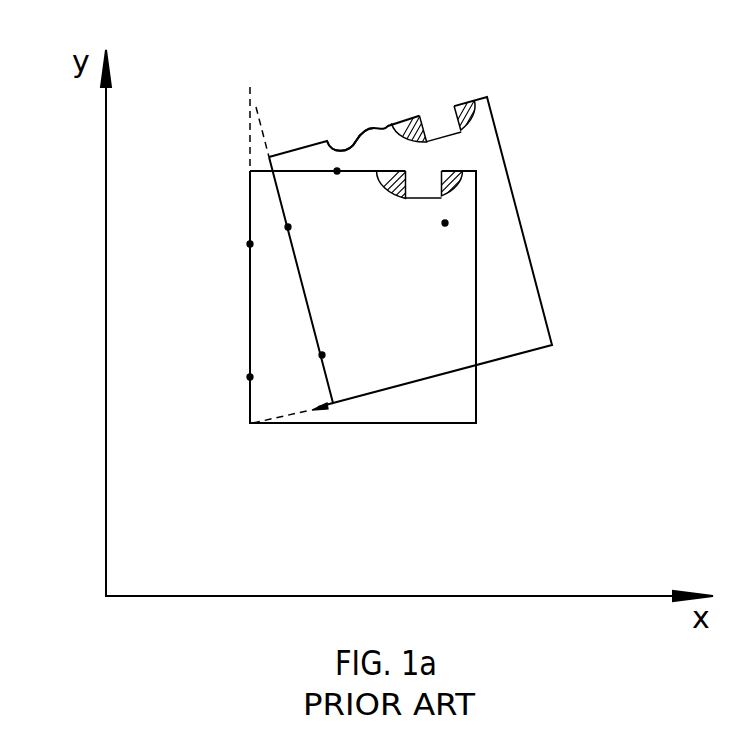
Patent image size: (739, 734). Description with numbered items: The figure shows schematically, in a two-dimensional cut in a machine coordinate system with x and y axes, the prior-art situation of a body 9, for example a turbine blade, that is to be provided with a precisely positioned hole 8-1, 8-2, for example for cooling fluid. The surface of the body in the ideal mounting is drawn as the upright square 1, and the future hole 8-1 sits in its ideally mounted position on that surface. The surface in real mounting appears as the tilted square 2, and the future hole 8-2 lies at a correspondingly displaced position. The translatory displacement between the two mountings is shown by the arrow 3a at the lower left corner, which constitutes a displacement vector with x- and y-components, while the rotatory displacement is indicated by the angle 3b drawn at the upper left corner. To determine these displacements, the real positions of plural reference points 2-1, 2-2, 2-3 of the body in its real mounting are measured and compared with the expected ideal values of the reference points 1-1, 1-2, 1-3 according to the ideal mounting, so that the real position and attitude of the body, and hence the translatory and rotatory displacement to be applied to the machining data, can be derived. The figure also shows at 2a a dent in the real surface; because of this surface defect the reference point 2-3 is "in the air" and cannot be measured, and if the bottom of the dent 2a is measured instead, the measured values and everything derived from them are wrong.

The surface of the body in ideal mounting 1 is at (476, 400).
The surface of the body in real mounting 2 is at (542, 293).
The reference point in ideal mounting 1-1 is at (250, 377).
The reference point in ideal mounting 1-2 is at (250, 244).
The reference point in ideal mounting 1-3 is at (337, 171).
The reference point in real mounting 2-1 is at (322, 355).
The reference point in real mounting 2-2 is at (288, 227).
The reference point in real mounting 2-3 is at (357, 130).
The dent in the surface 2a is at (334, 142).
The arrow indicating translatory displacement 3a is at (287, 418).
The angle indicating rotatory displacement 3b is at (262, 142).
The hole in ideally mounted position 8-1 is at (417, 190).
The hole at displaced position 8-2 is at (437, 118).
The body 9 is at (445, 223).